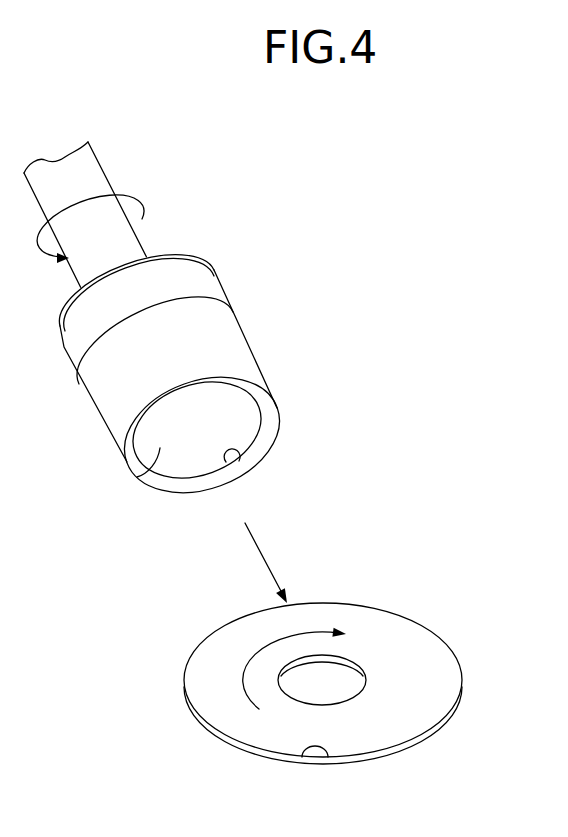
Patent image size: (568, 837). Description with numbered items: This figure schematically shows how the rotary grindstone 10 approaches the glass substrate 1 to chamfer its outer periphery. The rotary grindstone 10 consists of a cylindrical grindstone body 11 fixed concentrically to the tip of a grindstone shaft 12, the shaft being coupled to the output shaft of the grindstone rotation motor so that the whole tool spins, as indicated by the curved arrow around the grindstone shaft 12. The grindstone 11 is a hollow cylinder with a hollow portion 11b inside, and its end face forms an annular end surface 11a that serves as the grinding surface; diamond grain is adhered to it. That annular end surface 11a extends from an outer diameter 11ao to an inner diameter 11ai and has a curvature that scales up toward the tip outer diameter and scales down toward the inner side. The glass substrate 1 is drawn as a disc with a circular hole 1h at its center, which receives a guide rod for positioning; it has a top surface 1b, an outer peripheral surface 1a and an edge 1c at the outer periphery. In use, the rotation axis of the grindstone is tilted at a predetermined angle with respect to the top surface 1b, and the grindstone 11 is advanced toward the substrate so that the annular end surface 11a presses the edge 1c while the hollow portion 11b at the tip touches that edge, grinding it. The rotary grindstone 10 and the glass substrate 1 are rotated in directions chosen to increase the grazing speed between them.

The glass substrate 1 is at (397, 612).
The outer peripheral surface 1a is at (262, 753).
The top surface 1b is at (435, 668).
The edge of the outer periphery 1c is at (332, 757).
The circular hole 1h is at (342, 681).
The rotary grindstone 10 is at (328, 222).
The cylindrical grindstone body 11 is at (247, 340).
The annular end surface 11a is at (270, 427).
The outer diameter 11ao is at (280, 398).
The inner diameter 11ai is at (232, 464).
The hollow portion 11b is at (137, 477).
The grindstone shaft 12 is at (112, 172).